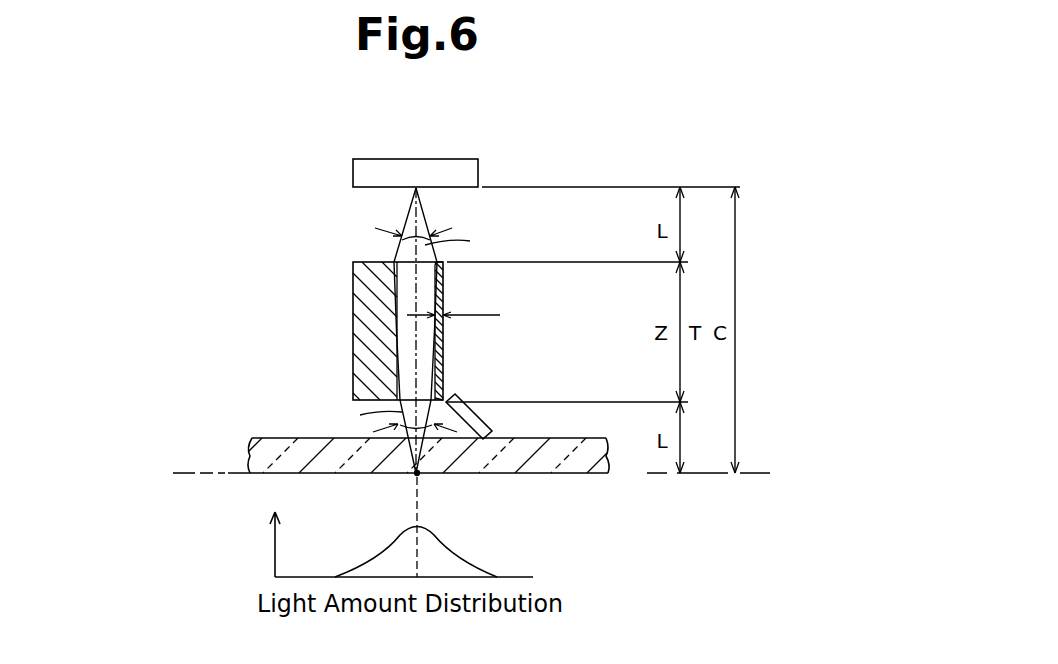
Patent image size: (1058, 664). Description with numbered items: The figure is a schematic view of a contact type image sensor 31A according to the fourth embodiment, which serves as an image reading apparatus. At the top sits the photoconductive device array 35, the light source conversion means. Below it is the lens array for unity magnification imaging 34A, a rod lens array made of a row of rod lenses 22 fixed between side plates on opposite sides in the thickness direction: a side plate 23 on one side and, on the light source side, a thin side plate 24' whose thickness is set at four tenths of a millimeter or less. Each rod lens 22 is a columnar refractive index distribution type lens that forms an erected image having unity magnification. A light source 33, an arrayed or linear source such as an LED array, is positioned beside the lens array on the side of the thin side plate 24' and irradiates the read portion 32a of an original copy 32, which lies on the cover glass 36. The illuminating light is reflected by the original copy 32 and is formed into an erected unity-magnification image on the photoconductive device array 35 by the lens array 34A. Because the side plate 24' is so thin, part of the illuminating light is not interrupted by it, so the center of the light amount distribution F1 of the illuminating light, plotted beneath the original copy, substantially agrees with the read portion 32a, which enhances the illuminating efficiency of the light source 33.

The contact type image sensor 31A is at (492, 147).
The photoconductive device array 35 is at (390, 164).
The lens array for unity magnification imaging 34A is at (377, 320).
The rod lens 22 is at (397, 305).
The side plate 23 is at (353, 350).
The side plate 24' is at (474, 331).
The light source 33 is at (458, 397).
The read portion 32a is at (414, 476).
The cover glass 36 is at (537, 475).
The original copy 32 is at (755, 478).
The light amount distribution F1 is at (497, 566).